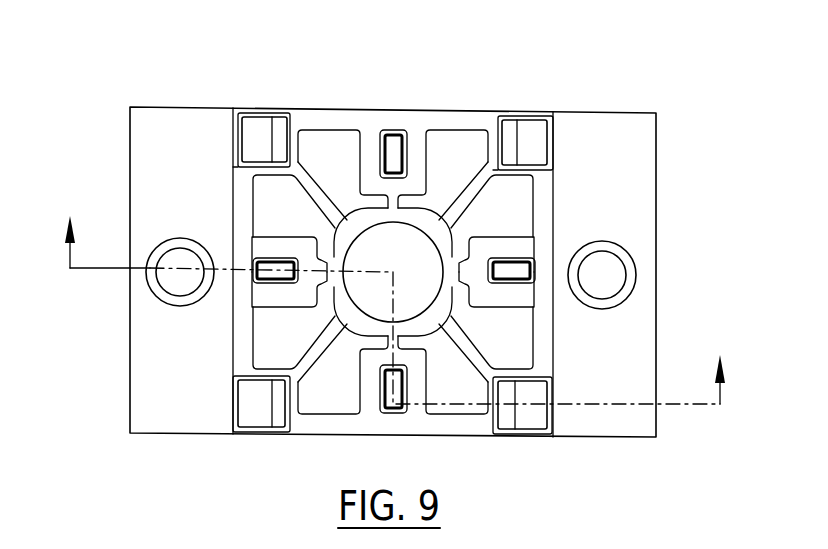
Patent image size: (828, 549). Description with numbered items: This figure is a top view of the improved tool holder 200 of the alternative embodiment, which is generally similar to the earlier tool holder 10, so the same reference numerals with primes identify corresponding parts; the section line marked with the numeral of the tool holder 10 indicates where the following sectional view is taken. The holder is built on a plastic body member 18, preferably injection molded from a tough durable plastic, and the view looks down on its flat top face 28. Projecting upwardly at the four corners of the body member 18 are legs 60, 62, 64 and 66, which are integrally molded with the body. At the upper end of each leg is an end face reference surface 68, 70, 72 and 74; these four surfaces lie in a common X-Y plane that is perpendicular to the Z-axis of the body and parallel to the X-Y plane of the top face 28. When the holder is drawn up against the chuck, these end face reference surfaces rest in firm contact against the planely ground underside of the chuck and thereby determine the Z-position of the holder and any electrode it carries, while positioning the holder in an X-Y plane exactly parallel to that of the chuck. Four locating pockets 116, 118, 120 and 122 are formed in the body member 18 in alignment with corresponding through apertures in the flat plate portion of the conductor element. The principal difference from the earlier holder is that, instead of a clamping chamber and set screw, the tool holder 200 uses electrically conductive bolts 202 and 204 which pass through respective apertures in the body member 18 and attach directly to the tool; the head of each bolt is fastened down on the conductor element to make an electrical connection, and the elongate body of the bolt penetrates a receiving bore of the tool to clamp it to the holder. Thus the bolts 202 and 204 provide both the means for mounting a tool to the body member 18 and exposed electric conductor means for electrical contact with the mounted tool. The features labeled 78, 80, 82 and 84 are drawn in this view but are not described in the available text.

The plastic body member 18 is at (180, 92).
The tool holder 200 is at (724, 111).
The top face 28 is at (338, 115).
The corner pad 78 is at (296, 87).
The leg 66 is at (268, 113).
The end face reference surface 74 is at (287, 117).
The corner pad 84 is at (569, 92).
The end face reference surface 68 is at (503, 120).
The leg 60 is at (542, 117).
The corner pad 80 is at (212, 444).
The leg 64 is at (247, 434).
The end face reference surface 72 is at (273, 432).
The corner pad 82 is at (561, 448).
The leg 62 is at (537, 432).
The end face reference surface 70 is at (505, 420).
The locating pocket 120 is at (397, 133).
The locating pocket 116 is at (378, 413).
The locating pocket 118 is at (258, 260).
The locating pocket 122 is at (532, 262).
The electrically conductive bolt 202 is at (175, 280).
The electrically conductive bolt 204 is at (618, 278).
The tool holder 10 is at (399, 311).